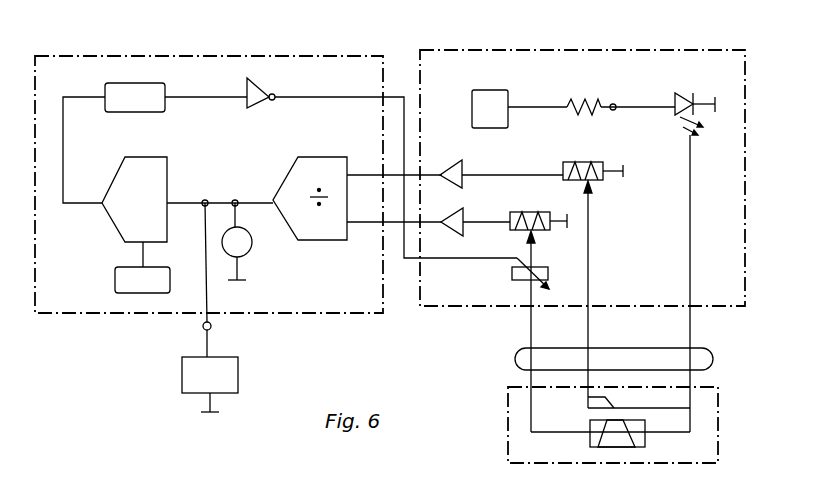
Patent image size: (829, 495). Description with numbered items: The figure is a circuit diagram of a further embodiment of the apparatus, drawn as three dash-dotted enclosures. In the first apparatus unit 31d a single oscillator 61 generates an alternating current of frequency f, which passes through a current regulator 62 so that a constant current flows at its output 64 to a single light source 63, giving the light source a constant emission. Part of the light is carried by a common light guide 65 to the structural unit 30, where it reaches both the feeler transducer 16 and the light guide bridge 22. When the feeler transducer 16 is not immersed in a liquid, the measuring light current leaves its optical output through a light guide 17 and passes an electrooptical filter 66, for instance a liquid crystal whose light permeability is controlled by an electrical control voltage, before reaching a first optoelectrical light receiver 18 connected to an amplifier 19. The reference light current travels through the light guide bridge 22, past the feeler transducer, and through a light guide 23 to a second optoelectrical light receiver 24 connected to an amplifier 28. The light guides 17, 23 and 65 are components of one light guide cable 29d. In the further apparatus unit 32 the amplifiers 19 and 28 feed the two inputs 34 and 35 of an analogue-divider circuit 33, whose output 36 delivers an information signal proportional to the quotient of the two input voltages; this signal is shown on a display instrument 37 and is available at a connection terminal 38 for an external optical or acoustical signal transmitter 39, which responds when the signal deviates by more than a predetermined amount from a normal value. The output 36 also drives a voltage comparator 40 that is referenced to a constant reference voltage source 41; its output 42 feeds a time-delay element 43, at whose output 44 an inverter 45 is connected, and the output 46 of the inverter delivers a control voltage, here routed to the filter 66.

The feeler transducer 16 is at (647, 440).
The light guide 17 is at (531, 332).
The first optoelectrical light receiver 18 is at (525, 210).
The amplifier 19 is at (453, 234).
The light guide bridge 22 is at (592, 398).
The light guide 23 is at (590, 332).
The second optoelectrical light receiver 24 is at (583, 162).
The amplifier 28 is at (450, 160).
The light guide cable 29d is at (713, 358).
The structural unit 30 is at (718, 445).
The first apparatus unit 31d is at (448, 306).
The further apparatus unit 32 is at (125, 313).
The analogue-divider circuit 33 is at (317, 163).
The input of divider circuit 34 is at (352, 227).
The input of divider circuit 35 is at (352, 172).
The output of divider circuit 36 is at (272, 198).
The display instrument 37 is at (252, 248).
The connection terminal 38 is at (202, 327).
The external signal transmitter 39 is at (238, 377).
The voltage comparator 40 is at (143, 165).
The constant reference voltage source 41 is at (115, 280).
The output of comparator 42 is at (102, 203).
The time-delay element 43 is at (132, 112).
The output of time-delay element 44 is at (165, 93).
The inverter 45 is at (258, 100).
The output of inverter 46 is at (275, 92).
The oscillator 61 is at (490, 90).
The current regulator 62 is at (572, 92).
The light source 63 is at (685, 95).
The output of current regulator 64 is at (617, 98).
The common light guide 65 is at (690, 328).
The electrooptical filter 66 is at (512, 277).